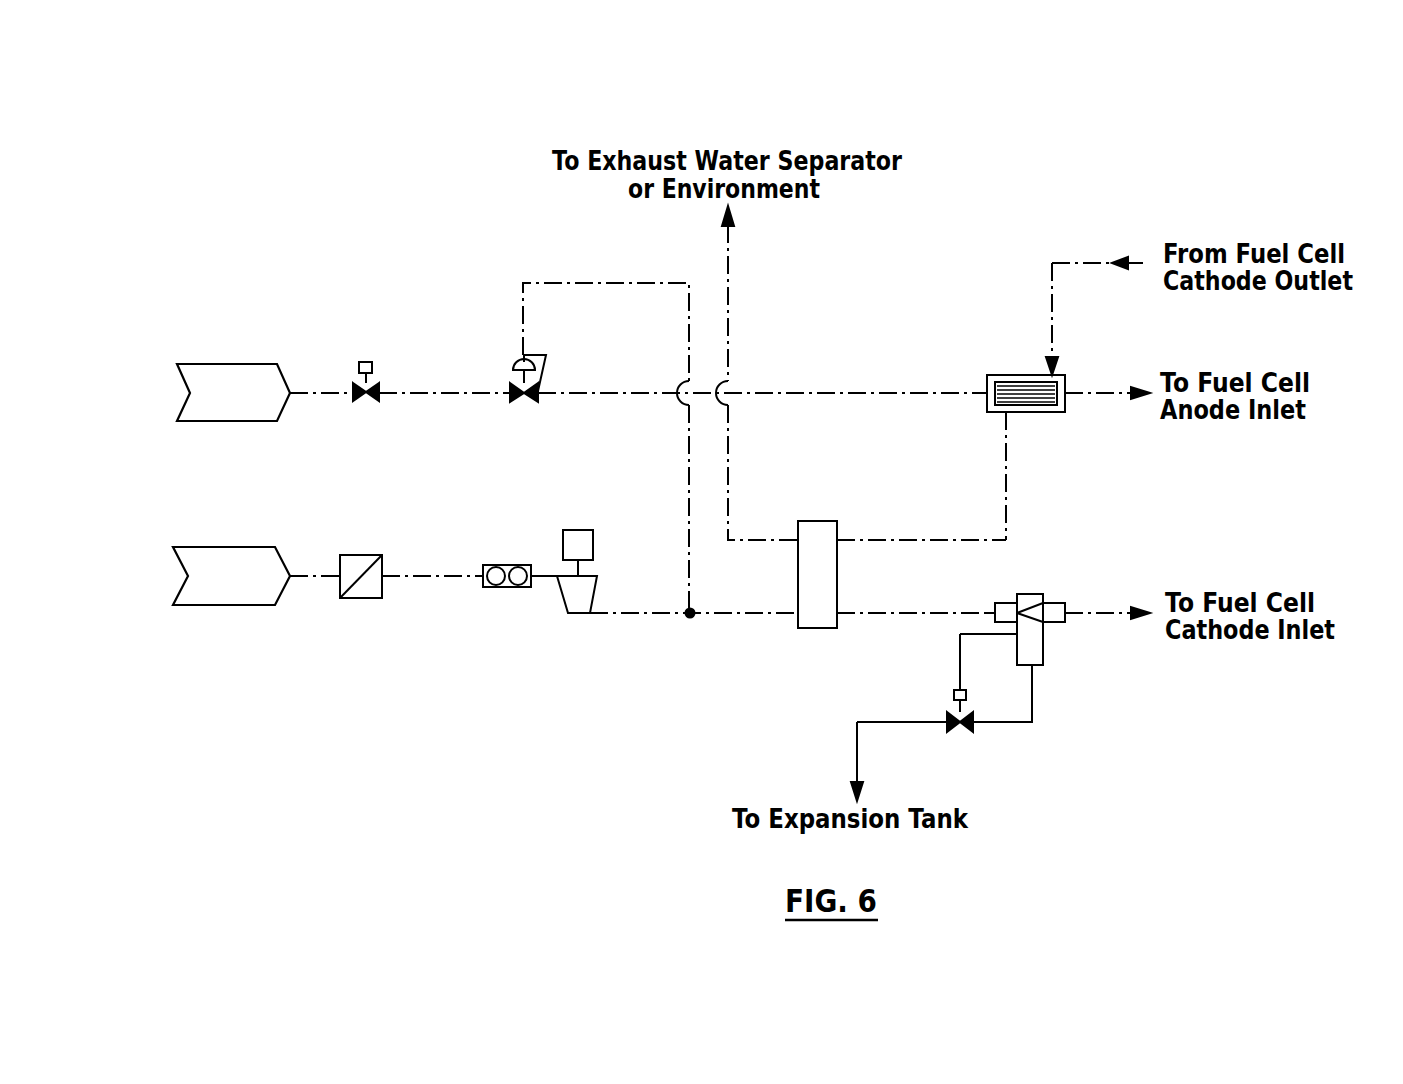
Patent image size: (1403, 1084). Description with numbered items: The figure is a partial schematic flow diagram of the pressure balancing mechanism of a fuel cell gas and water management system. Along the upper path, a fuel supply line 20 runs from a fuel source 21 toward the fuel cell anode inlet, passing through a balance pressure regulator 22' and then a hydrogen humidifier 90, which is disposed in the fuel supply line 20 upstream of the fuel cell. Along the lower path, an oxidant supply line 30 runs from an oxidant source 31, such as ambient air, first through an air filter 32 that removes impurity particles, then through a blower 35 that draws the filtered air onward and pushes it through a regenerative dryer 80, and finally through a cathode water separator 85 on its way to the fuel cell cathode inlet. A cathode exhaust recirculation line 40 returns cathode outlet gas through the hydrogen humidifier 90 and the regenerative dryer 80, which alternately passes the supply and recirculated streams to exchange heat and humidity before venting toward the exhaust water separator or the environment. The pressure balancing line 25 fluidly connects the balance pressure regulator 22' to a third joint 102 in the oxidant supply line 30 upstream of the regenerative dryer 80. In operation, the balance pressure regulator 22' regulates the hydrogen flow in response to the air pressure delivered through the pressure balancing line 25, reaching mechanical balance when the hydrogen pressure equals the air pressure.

The fuel supply line 20 is at (418, 393).
The fuel source 21 is at (260, 383).
The balance pressure regulator 22' is at (561, 353).
The pressure balancing line 25 is at (570, 283).
The oxidant supply line 30 is at (430, 583).
The oxidant source 31 is at (257, 560).
The air filter 32 is at (367, 583).
The blower 35 is at (572, 598).
The cathode exhaust recirculation line 40 is at (1092, 262).
The regenerative dryer 80 is at (802, 617).
The cathode water separator 85 is at (1035, 652).
The hydrogen humidifier 90 is at (1045, 403).
The third joint 102 is at (690, 617).